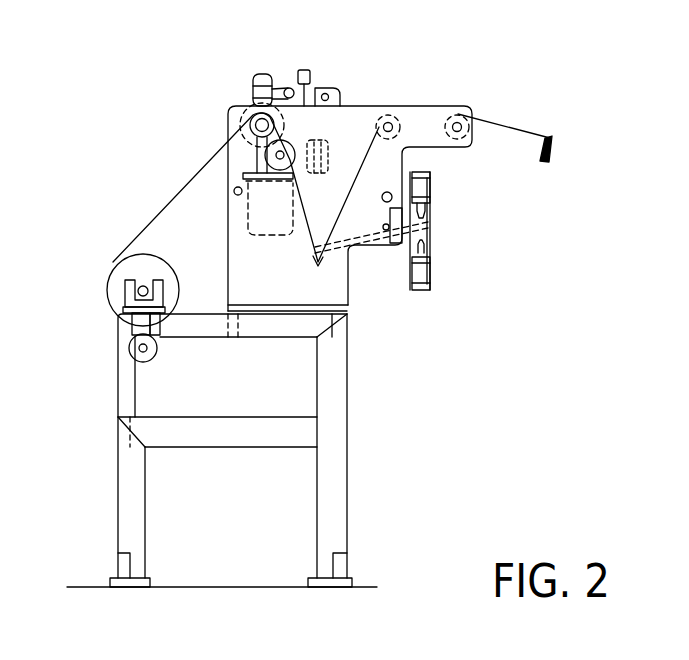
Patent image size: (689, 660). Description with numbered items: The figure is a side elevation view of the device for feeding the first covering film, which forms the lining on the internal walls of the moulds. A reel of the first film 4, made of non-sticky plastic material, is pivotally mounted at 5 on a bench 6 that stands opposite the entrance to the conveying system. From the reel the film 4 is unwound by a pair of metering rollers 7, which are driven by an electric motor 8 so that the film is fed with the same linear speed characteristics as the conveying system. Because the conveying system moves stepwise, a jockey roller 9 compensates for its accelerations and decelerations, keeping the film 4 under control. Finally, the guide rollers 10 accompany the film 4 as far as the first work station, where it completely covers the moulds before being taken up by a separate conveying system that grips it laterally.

The first film 4 is at (543, 160).
The pivot mounting of the film reel 5 is at (144, 284).
The bench 6 is at (122, 500).
The metering rollers 7 is at (280, 88).
The electric motor 8 is at (270, 225).
The jockey roller 9 is at (320, 259).
The guide rollers 10 is at (456, 120).